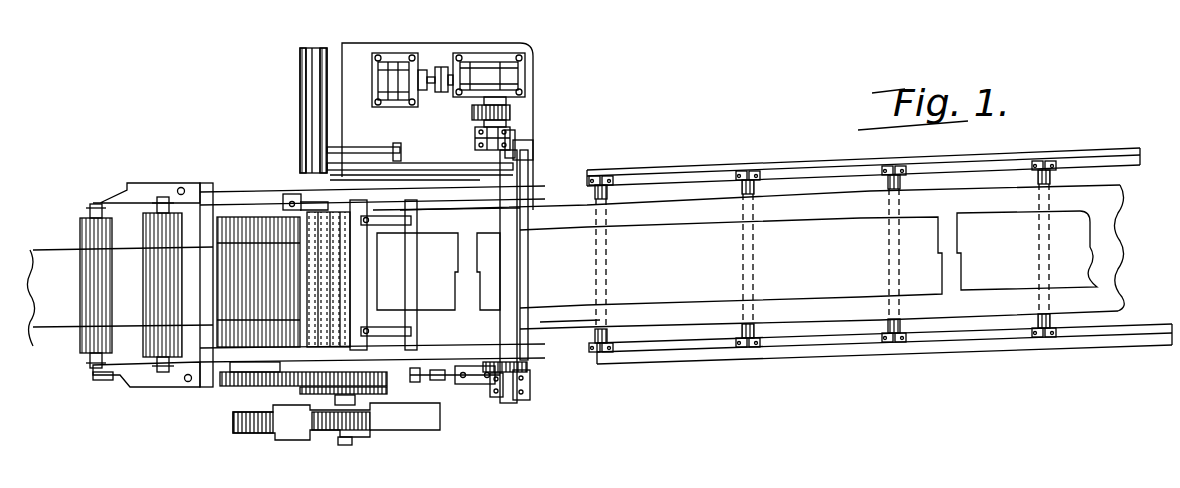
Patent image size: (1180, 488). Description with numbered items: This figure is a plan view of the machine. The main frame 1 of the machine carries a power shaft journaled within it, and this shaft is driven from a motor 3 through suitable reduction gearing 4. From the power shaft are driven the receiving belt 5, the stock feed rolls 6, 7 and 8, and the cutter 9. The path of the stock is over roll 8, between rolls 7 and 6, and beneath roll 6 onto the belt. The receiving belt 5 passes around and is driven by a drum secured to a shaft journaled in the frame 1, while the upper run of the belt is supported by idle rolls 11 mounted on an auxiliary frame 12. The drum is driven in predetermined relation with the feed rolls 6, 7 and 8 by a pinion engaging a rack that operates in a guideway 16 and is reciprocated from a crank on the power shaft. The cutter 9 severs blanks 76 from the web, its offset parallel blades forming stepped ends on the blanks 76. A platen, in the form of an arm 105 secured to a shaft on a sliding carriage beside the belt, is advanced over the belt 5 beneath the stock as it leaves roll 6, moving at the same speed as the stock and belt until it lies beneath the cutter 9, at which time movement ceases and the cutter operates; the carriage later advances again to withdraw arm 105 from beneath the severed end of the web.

The main frame 1 is at (271, 202).
The motor 3 is at (380, 80).
The reduction gearing 4 is at (527, 75).
The receiving belt 5 is at (807, 312).
The stock feed roll 6 is at (342, 257).
The stock feed roll 7 is at (295, 202).
The stock feed roll 8 is at (230, 227).
The cutter 9 is at (370, 290).
The idle rolls 11 is at (600, 337).
The auxiliary frame 12 is at (833, 350).
The guideway 16 is at (420, 422).
The blank 76 is at (793, 230).
The arm 105 is at (318, 106).